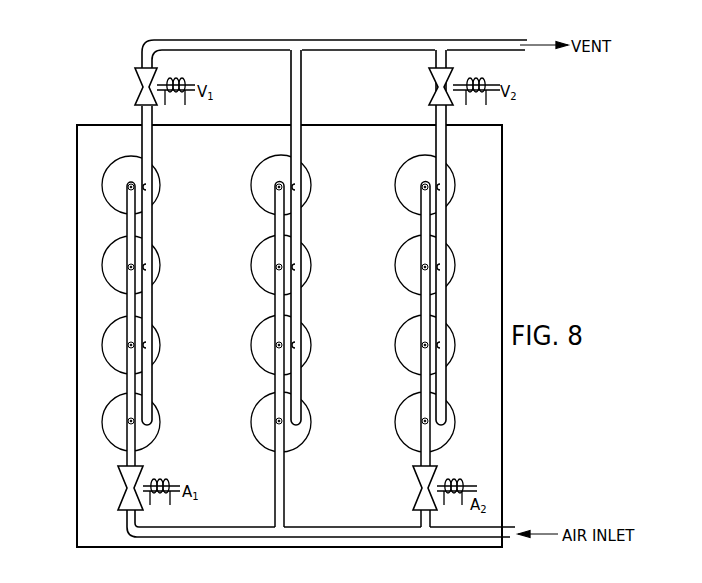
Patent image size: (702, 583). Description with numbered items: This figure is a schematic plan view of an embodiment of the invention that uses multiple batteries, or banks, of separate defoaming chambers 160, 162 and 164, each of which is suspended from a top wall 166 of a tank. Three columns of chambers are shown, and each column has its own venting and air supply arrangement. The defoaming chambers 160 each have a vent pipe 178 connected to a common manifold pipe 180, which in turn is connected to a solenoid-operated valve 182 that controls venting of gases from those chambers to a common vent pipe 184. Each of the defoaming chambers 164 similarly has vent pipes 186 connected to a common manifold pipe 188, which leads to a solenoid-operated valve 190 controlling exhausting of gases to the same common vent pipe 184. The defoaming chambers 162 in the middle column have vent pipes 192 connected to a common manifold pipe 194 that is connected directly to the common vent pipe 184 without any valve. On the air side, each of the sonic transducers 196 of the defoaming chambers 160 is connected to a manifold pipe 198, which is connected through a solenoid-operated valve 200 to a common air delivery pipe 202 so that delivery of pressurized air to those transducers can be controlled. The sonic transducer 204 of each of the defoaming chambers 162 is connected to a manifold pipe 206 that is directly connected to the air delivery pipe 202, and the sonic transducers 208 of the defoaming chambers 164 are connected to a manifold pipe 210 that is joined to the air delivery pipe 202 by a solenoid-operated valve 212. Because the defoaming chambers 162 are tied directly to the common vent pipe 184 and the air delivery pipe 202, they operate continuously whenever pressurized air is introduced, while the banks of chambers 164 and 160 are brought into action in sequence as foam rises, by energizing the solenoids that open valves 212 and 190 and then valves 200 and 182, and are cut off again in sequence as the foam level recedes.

The defoaming chambers 160 is at (152, 257).
The defoaming chambers 162 is at (302, 253).
The defoaming chambers 164 is at (452, 255).
The top wall 166 is at (82, 500).
The vent pipe 178 is at (146, 345).
The manifold pipe 180 is at (152, 140).
The solenoid-operated valve 182 is at (137, 98).
The common vent pipe 184 is at (285, 40).
The vent pipes 186 is at (441, 348).
The manifold pipe 188 is at (446, 141).
The solenoid-operated valve 190 is at (429, 100).
The vent pipes 192 is at (296, 187).
The manifold pipe 194 is at (291, 139).
The sonic transducers 196 is at (130, 347).
The manifold pipe 198 is at (125, 307).
The solenoid-operated valve 200 is at (121, 490).
The air delivery pipe 202 is at (236, 527).
The sonic transducer 204 is at (279, 420).
The manifold pipe 206 is at (275, 310).
The sonic transducers 208 is at (424, 348).
The manifold pipe 210 is at (421, 304).
The solenoid-operated valve 212 is at (413, 478).